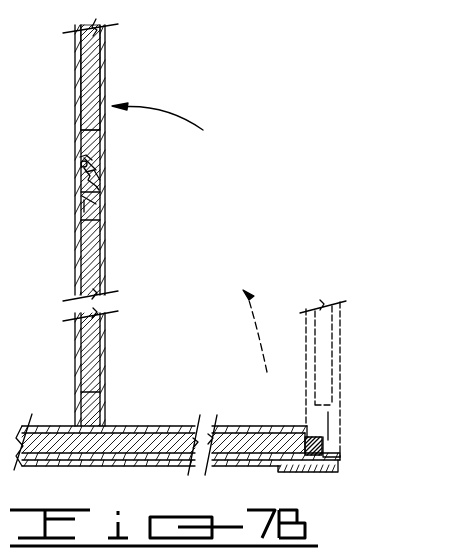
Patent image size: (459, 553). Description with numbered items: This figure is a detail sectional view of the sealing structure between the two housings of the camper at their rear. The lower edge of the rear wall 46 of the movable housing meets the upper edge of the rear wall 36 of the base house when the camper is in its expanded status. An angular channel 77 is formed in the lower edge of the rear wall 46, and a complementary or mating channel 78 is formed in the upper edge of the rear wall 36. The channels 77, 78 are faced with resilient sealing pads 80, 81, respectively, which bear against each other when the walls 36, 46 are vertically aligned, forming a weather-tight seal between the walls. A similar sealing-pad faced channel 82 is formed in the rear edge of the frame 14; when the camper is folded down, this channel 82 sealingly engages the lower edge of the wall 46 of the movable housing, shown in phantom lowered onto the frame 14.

The frame 14 is at (316, 475).
The rear wall of the base house 36 is at (98, 250).
The rear wall of the movable housing 46 is at (97, 54).
The angular channel 77 is at (80, 157).
The mating channel 78 is at (84, 202).
The resilient sealing pad 80 is at (80, 164).
The resilient sealing pad 81 is at (81, 176).
The sealing-pad faced channel 82 is at (306, 437).